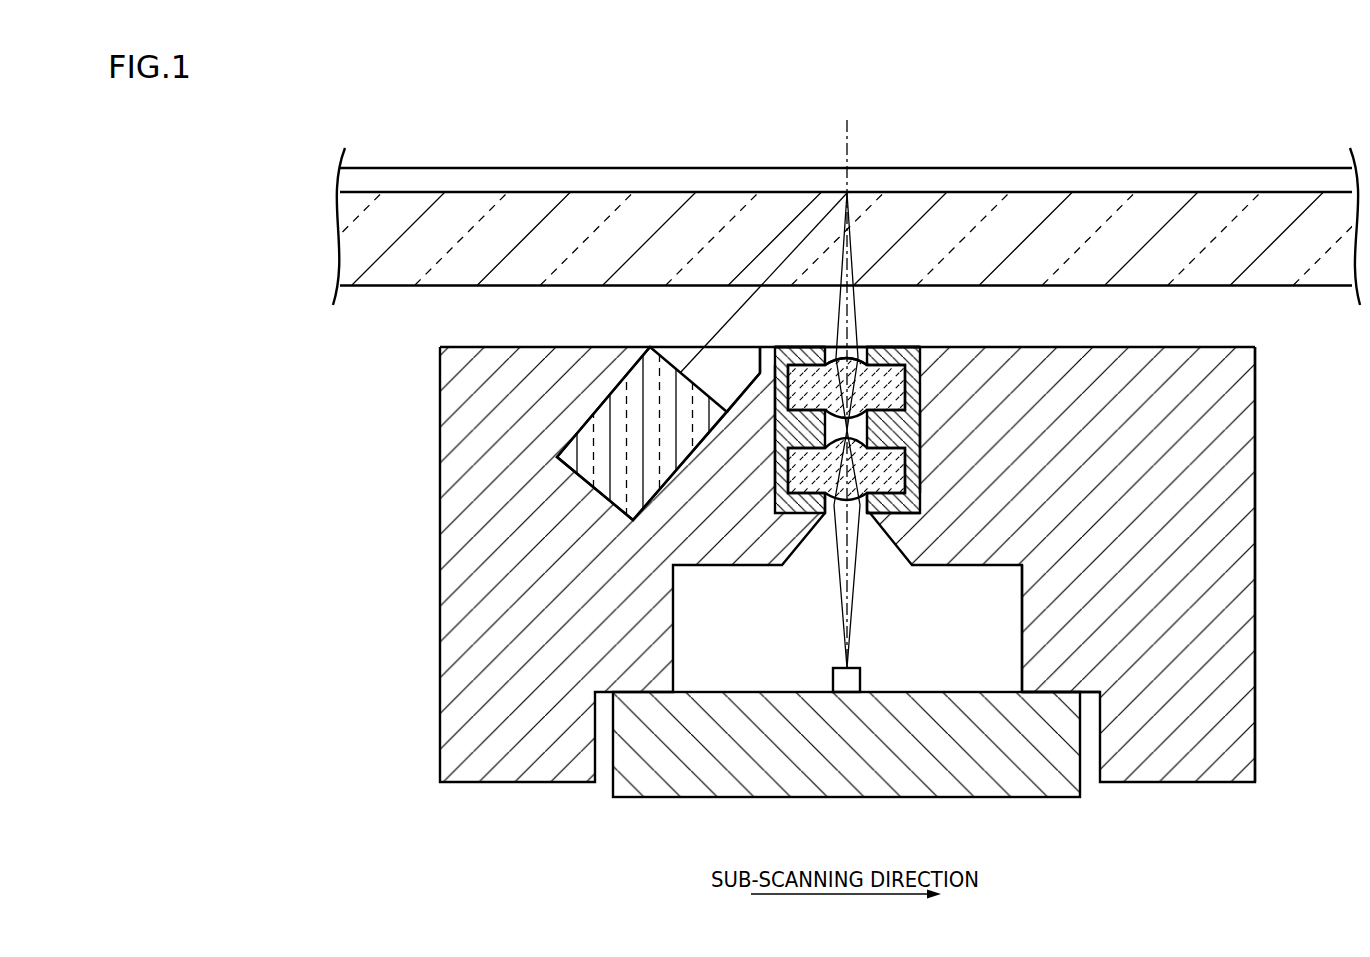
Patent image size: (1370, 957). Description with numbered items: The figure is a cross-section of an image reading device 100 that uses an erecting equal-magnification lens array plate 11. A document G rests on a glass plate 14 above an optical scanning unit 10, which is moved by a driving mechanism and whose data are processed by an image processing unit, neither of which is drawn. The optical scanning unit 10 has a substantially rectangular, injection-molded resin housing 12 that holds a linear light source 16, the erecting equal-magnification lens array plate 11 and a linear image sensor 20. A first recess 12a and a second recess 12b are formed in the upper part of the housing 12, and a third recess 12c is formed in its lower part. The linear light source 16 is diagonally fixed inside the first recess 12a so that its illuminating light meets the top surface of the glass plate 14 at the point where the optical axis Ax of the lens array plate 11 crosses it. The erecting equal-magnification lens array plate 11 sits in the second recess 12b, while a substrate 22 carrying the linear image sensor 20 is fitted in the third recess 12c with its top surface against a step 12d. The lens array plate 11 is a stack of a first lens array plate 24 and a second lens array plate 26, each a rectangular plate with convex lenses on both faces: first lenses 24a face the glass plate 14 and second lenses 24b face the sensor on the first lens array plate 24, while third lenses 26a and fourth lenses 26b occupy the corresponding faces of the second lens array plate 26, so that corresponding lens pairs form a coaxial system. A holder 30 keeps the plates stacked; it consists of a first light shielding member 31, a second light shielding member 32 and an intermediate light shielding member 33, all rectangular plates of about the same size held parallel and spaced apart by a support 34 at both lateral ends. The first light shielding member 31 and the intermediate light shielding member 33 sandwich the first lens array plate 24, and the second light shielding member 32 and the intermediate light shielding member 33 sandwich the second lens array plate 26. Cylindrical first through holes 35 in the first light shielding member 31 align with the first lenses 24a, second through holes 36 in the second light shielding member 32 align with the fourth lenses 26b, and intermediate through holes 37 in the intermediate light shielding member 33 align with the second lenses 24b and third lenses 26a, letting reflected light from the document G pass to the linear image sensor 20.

The image reading device 100 is at (1148, 126).
The optical scanning unit 10 is at (1270, 562).
The erecting equal-magnification lens array plate 11 is at (889, 334).
The housing 12 is at (455, 597).
The first recess 12a is at (718, 380).
The second recess 12b is at (783, 347).
The third recess 12c is at (1022, 652).
The step 12d is at (1033, 692).
The glass plate 14 is at (532, 200).
The linear light source 16 is at (599, 400).
The linear image sensor 20 is at (833, 680).
The substrate 22 is at (737, 797).
The first lens array plate 24 is at (906, 407).
The first lens 24a is at (842, 350).
The second lens 24b is at (913, 432).
The second lens array plate 26 is at (923, 457).
The third lens 26a is at (800, 431).
The fourth lens 26b is at (864, 508).
The holder 30 is at (925, 470).
The first light shielding member 31 is at (880, 364).
The second light shielding member 32 is at (908, 514).
The intermediate light shielding member 33 is at (796, 438).
The support 34 is at (915, 428).
The first through hole 35 is at (855, 360).
The second through hole 36 is at (829, 508).
The intermediate through hole 37 is at (803, 424).
The document G is at (457, 168).
The optical axis Ax is at (845, 382).